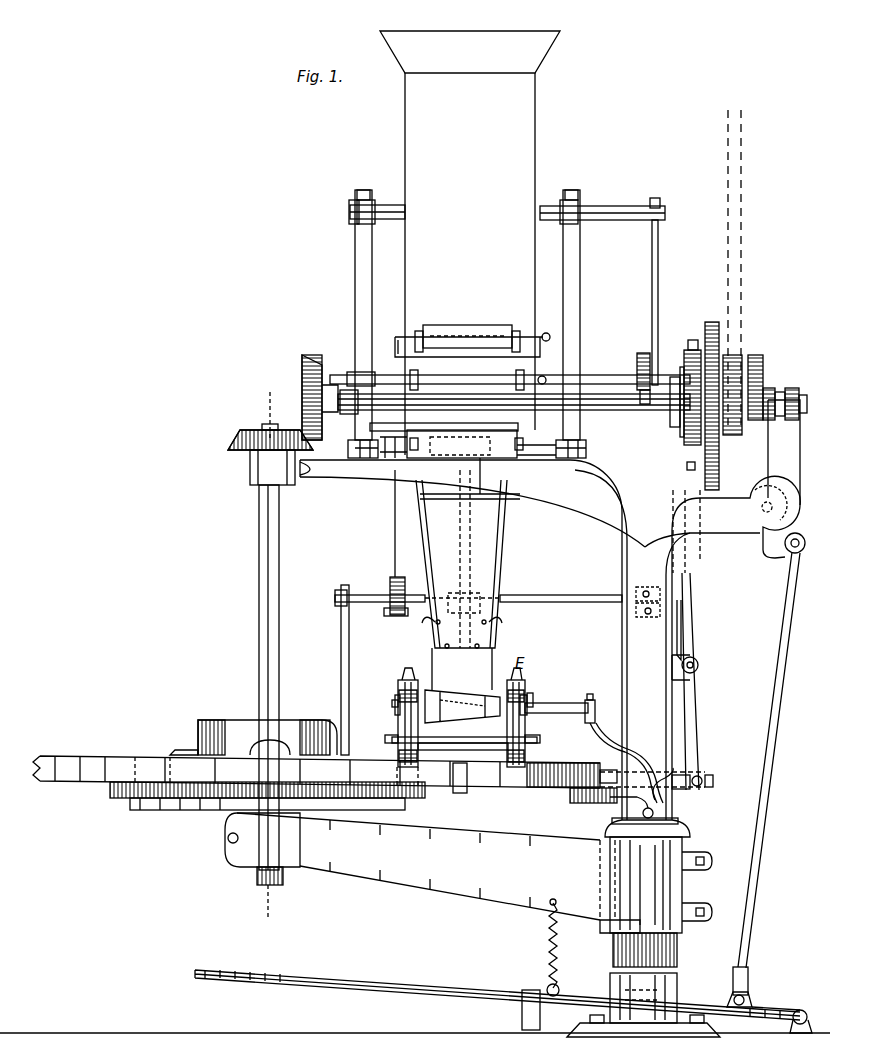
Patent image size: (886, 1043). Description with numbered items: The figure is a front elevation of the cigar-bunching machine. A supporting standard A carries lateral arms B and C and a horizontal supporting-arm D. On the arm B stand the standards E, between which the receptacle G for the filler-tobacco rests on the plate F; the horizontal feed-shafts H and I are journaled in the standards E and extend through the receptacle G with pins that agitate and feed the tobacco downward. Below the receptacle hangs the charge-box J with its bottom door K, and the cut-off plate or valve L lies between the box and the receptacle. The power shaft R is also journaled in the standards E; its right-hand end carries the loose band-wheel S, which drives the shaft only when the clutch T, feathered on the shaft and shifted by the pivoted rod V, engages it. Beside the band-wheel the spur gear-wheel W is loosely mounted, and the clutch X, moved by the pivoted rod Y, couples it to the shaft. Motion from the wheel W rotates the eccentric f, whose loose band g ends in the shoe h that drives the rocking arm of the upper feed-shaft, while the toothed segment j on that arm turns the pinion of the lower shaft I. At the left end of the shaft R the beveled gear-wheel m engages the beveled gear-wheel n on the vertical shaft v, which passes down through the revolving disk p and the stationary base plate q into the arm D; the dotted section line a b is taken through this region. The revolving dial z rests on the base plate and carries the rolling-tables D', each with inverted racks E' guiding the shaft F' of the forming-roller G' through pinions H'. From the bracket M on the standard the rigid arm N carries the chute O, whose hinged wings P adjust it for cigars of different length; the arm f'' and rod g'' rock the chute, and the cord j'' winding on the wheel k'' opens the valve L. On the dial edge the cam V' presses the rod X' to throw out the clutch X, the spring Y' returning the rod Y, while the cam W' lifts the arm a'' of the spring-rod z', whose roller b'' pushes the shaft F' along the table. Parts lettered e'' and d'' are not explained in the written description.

The receptacle G is at (470, 243).
The standards E is at (471, 324).
The upper feed-shaft H is at (507, 291).
The lower feed-shaft I is at (592, 380).
The power shaft R is at (612, 412).
The cut-off plate or valve L is at (432, 424).
The charge-box J is at (451, 444).
The plate F is at (536, 441).
The door K is at (487, 499).
The toothed segment j is at (640, 362).
The shoe h is at (640, 386).
The clutch X is at (671, 386).
The eccentric f is at (677, 381).
The loose band g is at (692, 396).
The spur gear-wheel W is at (710, 397).
The band-wheel S is at (738, 362).
The clutch T is at (762, 366).
The beveled gear-wheel m is at (320, 389).
The beveled gear-wheel n is at (264, 455).
The dotted section line a is at (270, 407).
The vertical shaft v is at (279, 560).
The lateral arm B is at (472, 640).
The supporting standard A is at (652, 667).
The lateral arm C is at (722, 524).
The pivoted rod V is at (786, 476).
The treadle lever e'' is at (503, 997).
The horizontal supporting-arm D is at (418, 866).
The base plate q is at (228, 826).
The dotted section line b is at (268, 912).
The revolving dial z is at (267, 737).
The revolving disk p is at (192, 752).
The chute O is at (461, 559).
The horizontal arm N is at (553, 598).
The cord j'' is at (389, 542).
The rod g'' is at (354, 609).
The wheel k'' is at (399, 624).
The arm f'' is at (339, 670).
The bracket M is at (646, 592).
The pivoted rod Y is at (691, 679).
The spring Y' is at (698, 630).
The inverted racks E' is at (401, 712).
The pinions H' is at (464, 697).
The laterally-hinged wings P is at (462, 669).
The forming-roller G' is at (462, 706).
The roller shaft F' is at (556, 714).
The vertical roller b'' is at (599, 700).
The rolling-tables D' is at (464, 748).
The spring-rod z' is at (626, 763).
The cam V' is at (563, 767).
The cam W' is at (593, 802).
The rod X' is at (668, 780).
The arm a'' is at (631, 807).
The link d'' is at (661, 797).